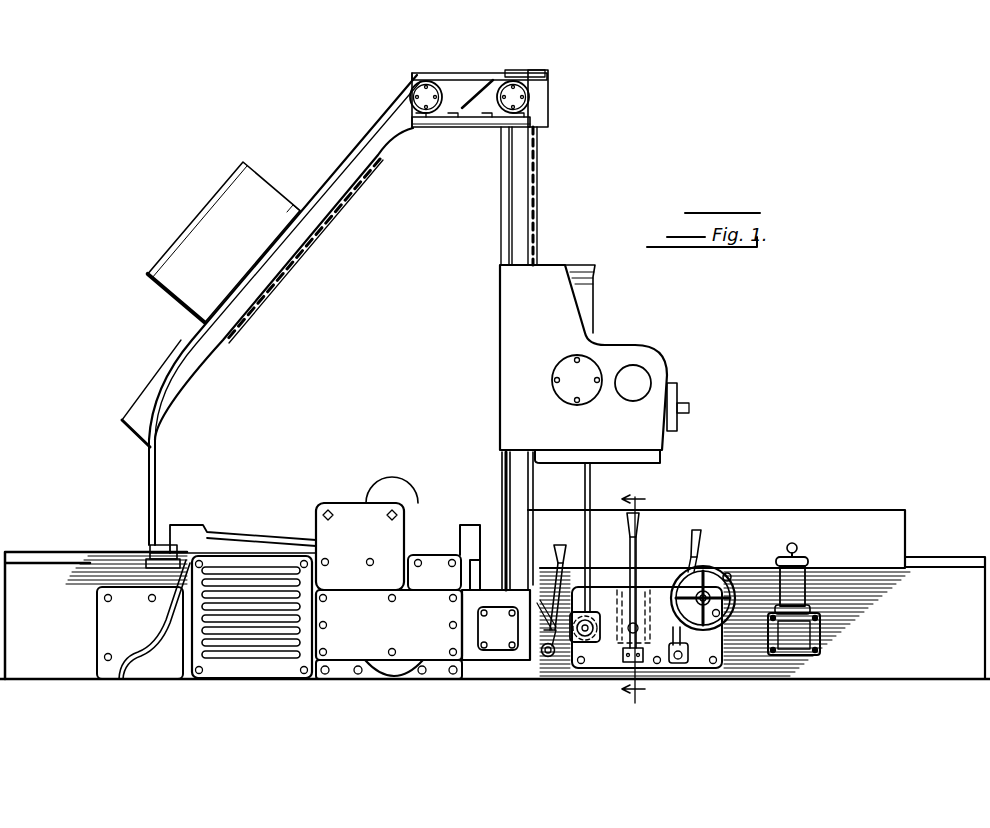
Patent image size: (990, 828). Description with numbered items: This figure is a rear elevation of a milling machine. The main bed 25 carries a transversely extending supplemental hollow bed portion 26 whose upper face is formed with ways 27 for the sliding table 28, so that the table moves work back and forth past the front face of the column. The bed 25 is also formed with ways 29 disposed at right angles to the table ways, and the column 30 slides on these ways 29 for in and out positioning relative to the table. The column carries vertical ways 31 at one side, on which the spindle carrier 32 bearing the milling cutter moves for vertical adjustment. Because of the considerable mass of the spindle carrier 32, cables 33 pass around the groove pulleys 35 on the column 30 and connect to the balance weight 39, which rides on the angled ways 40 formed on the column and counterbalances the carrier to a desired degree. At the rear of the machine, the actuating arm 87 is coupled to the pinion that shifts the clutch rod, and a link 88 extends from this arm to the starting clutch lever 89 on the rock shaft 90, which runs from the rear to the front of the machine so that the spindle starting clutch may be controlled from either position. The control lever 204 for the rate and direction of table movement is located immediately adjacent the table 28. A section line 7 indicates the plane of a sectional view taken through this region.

The section line 7- 7 is at (636, 599).
The main bed 25 is at (158, 660).
The supplemental hollow bed portion 26 is at (59, 657).
The ways 27 is at (945, 560).
The sliding table 28 is at (866, 526).
The ways 29 is at (203, 525).
The column 30 is at (172, 476).
The vertical ways 31 is at (507, 182).
The spindle carrier 32 is at (556, 312).
The cables 33 is at (480, 75).
The groove pulleys 35 is at (525, 82).
The balance weight 39 is at (256, 192).
The angled ways 40 is at (178, 357).
The actuating arm 87 is at (480, 588).
The link 88 is at (538, 645).
The starting clutch lever 89 is at (563, 655).
The rock shaft 90 is at (549, 658).
The control lever 204 is at (637, 540).